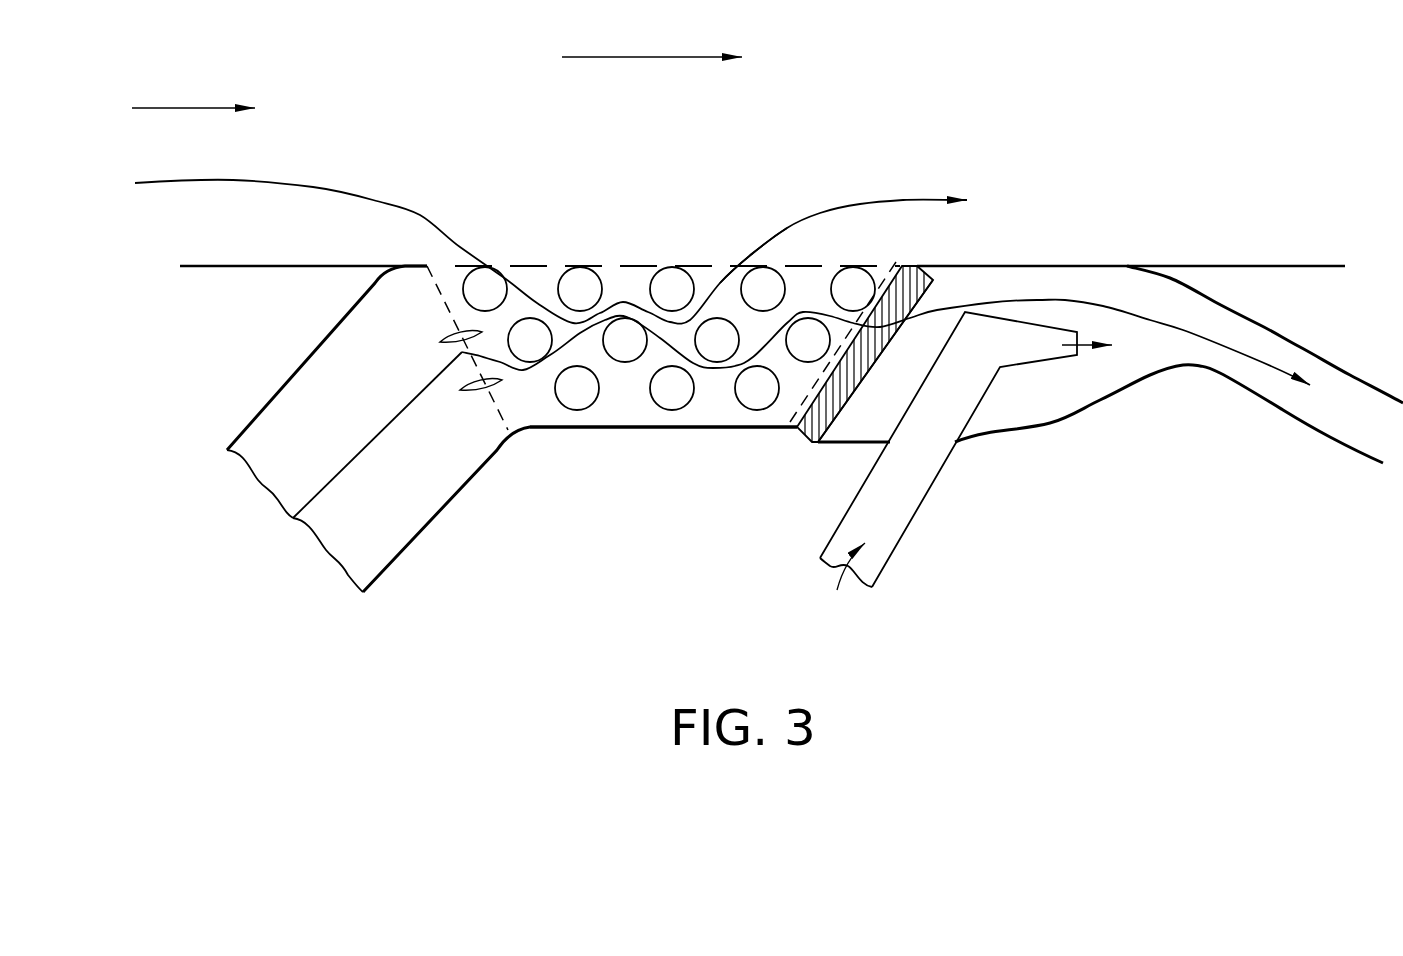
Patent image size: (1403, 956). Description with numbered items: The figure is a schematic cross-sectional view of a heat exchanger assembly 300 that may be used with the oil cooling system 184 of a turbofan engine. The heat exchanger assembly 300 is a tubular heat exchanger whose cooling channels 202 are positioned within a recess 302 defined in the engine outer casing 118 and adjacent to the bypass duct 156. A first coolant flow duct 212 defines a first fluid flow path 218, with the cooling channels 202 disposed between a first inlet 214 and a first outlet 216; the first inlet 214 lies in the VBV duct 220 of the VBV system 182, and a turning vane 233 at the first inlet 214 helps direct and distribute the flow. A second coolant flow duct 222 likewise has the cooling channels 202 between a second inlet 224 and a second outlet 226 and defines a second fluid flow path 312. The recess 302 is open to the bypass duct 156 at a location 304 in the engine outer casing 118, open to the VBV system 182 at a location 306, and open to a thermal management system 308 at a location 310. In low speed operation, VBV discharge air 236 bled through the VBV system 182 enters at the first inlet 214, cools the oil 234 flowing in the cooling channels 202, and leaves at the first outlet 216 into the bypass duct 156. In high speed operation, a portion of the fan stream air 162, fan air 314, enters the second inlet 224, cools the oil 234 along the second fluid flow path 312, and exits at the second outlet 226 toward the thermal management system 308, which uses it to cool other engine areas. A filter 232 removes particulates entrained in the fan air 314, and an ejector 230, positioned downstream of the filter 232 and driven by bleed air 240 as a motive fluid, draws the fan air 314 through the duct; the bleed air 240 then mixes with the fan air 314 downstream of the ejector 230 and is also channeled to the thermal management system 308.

The engine outer casing 118 is at (308, 265).
The bypass duct 156 is at (636, 133).
The fan stream air 162 is at (653, 57).
The VBV system 182 is at (227, 490).
The oil cooling system 184 is at (582, 620).
The cooling channels 202 is at (658, 408).
The first coolant flow duct 212 is at (603, 420).
The first inlet 214 is at (505, 398).
The first outlet 216 is at (677, 341).
The first fluid flow path 218 is at (350, 458).
The VBV duct 220 is at (292, 372).
The second coolant flow duct 222 is at (800, 305).
The second inlet 224 is at (677, 341).
The second outlet 226 is at (782, 420).
The ejector 230 is at (933, 485).
The filter 232 is at (890, 342).
The turning vane 233 is at (452, 332).
The oil 234 is at (775, 266).
The VBV discharge air 236 is at (313, 543).
The bleed air 240 is at (1073, 347).
The heat exchanger assembly 300 is at (1058, 98).
The recess 302 is at (945, 296).
The location 304 is at (677, 341).
The location 306 is at (497, 412).
The thermal management system 308 is at (1272, 400).
The location 310 is at (1175, 358).
The second fluid flow path 312 is at (316, 185).
The fan air 314 is at (193, 108).